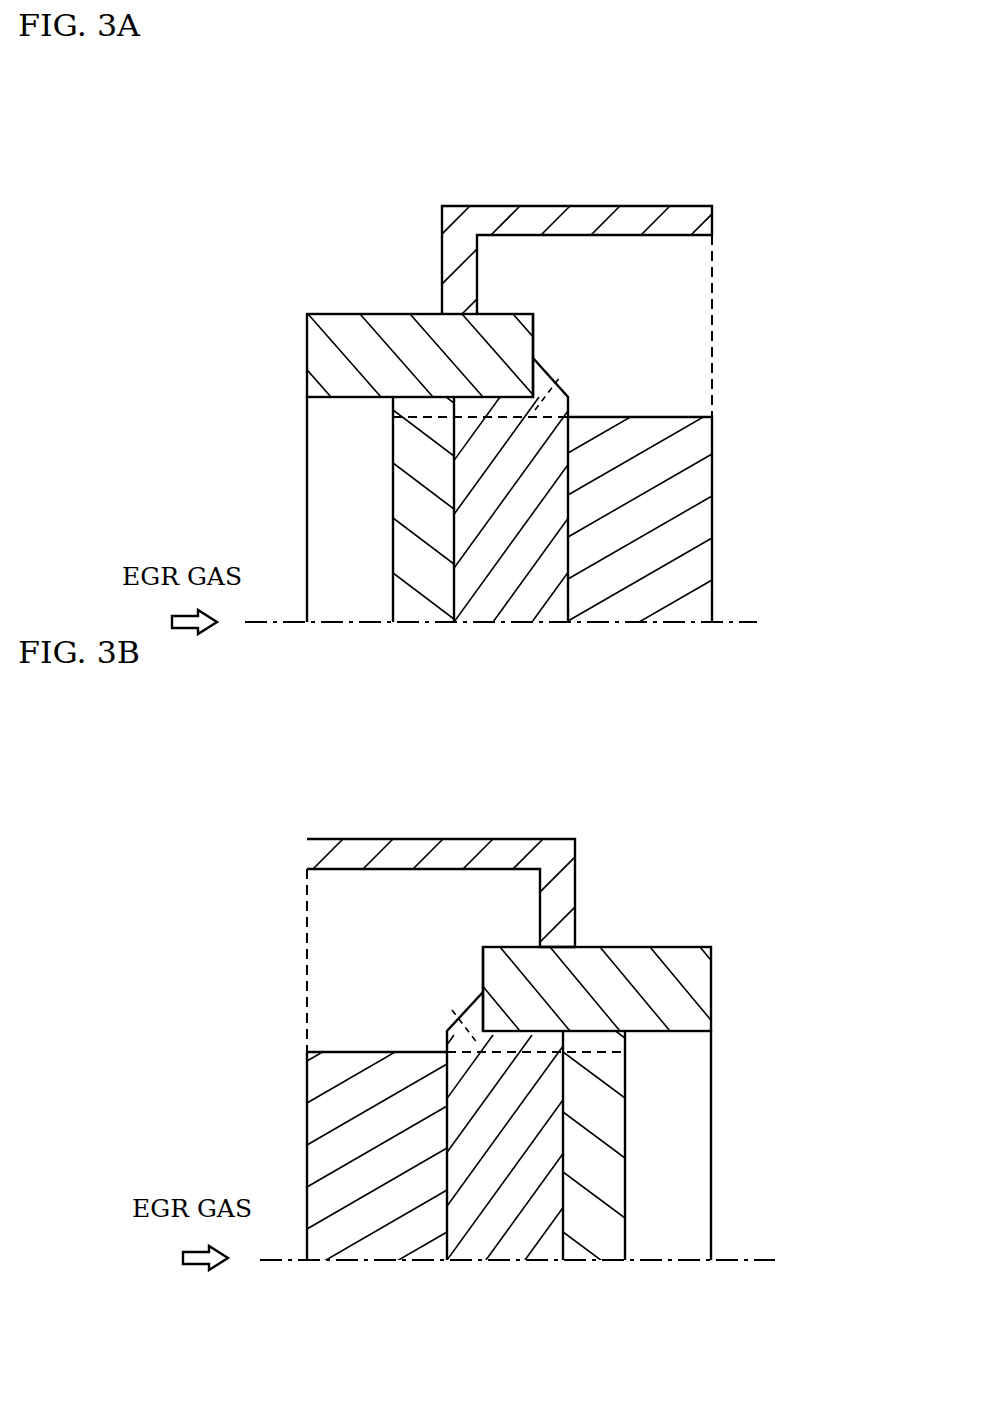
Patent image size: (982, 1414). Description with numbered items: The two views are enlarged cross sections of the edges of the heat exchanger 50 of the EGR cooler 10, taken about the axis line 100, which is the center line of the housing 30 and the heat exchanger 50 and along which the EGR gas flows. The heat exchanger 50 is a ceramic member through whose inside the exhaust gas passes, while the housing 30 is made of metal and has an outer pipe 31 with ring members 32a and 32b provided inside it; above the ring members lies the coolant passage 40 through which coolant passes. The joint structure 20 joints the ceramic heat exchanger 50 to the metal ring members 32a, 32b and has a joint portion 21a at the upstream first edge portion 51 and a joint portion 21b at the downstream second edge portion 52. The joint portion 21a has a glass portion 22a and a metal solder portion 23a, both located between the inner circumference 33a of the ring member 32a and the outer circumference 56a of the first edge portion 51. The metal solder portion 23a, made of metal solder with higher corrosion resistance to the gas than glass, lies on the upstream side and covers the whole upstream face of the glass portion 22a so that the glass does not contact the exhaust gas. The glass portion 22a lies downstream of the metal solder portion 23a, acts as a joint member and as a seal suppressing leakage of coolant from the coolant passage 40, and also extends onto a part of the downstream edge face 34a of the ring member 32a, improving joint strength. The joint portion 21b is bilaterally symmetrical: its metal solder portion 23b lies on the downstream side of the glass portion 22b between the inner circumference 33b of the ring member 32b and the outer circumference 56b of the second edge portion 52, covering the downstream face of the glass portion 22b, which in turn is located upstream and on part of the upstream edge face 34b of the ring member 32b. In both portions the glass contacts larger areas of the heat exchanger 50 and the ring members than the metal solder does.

In FIG. 3A, the EGR cooler 10 is at (182, 174).
In FIG. 3B, the EGR cooler 10 is at (174, 789).
In FIG. 3A, the joint structure 20 is at (545, 629).
In FIG. 3B, the joint structure 20 is at (483, 1267).
In FIG. 3A, the joint portion 21a is at (402, 676).
In FIG. 3B, the joint portion 21b is at (487, 1316).
In FIG. 3A, the glass portion 22a is at (515, 593).
In FIG. 3B, the glass portion 22b is at (517, 1240).
In FIG. 3A, the metal solder portion 23a is at (423, 600).
In FIG. 3B, the metal solder portion 23b is at (587, 1240).
In FIG. 3A, the housing 30 is at (293, 170).
In FIG. 3B, the housing 30 is at (733, 791).
In FIG. 3A, the outer pipe 31 is at (458, 207).
In FIG. 3B, the outer pipe 31 is at (568, 839).
In FIG. 3A, the ring member 32a is at (340, 314).
In FIG. 3B, the ring member 32b is at (630, 947).
In FIG. 3A, the inner circumference 33a is at (356, 398).
In FIG. 3B, the inner circumference 33b is at (660, 1032).
In FIG. 3A, the edge face 34a is at (533, 328).
In FIG. 3B, the edge face 34b is at (483, 960).
In FIG. 3A, the coolant passage 40 is at (667, 295).
In FIG. 3B, the coolant passage 40 is at (350, 940).
In FIG. 3A, the heat exchanger 50 is at (690, 450).
In FIG. 3B, the heat exchanger 50 is at (317, 1078).
In FIG. 3A, the first edge portion 51 is at (386, 498).
In FIG. 3B, the second edge portion 52 is at (628, 1122).
In FIG. 3A, the outer circumference 56a is at (557, 375).
In FIG. 3B, the outer circumference 56b is at (447, 1022).
In FIG. 3A, the axis line 100 is at (748, 623).
In FIG. 3B, the axis line 100 is at (760, 1260).